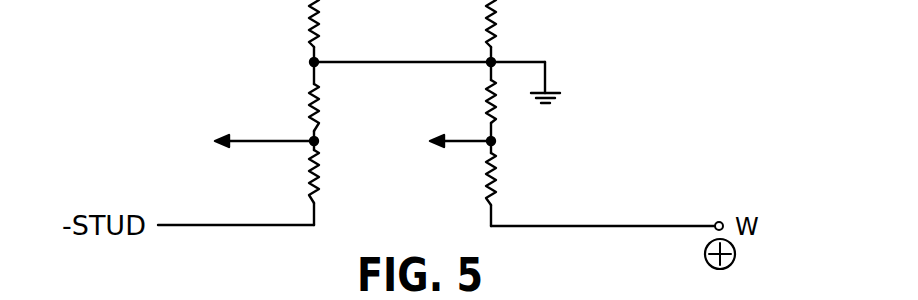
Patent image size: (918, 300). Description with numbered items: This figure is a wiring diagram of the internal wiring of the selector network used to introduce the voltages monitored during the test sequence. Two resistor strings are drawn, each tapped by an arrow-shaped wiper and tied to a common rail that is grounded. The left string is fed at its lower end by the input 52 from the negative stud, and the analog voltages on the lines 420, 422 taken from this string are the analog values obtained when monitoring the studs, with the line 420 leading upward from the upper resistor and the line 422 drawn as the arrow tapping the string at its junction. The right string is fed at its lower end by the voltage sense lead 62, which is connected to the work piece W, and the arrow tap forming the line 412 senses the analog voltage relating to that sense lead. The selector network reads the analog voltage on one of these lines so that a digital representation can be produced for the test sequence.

The analog voltage line 420 is at (254, 0).
The analog voltage line 422 is at (260, 139).
The input from negative stud 52 is at (233, 224).
The analog voltage line 412 is at (460, 143).
The voltage sense lead 62 is at (563, 226).